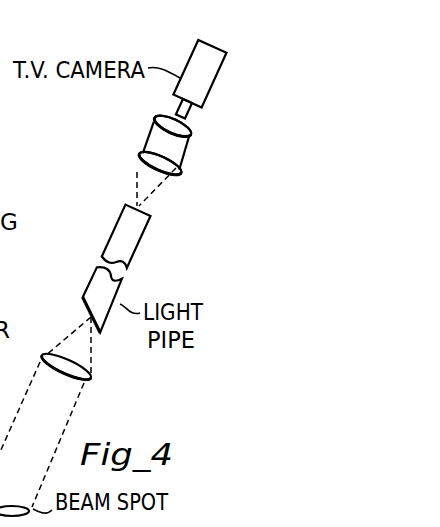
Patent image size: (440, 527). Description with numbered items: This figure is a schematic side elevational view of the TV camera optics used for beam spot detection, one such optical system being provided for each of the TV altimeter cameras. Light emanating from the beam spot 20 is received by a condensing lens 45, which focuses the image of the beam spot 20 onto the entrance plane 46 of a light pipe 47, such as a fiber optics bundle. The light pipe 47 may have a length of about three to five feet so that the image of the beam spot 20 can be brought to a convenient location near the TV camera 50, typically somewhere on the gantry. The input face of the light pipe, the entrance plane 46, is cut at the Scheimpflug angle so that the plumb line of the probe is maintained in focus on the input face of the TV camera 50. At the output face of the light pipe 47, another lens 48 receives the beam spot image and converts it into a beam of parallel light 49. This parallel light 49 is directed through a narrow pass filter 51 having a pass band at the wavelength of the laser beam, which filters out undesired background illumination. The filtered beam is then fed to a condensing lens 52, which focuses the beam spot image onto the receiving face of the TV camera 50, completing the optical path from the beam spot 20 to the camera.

The TV camera 50 is at (210, 44).
The narrow pass filter 51 is at (151, 133).
The condensing lens 52 is at (190, 130).
The lens 48 is at (139, 163).
The beam of parallel light 49 is at (182, 168).
The light pipe 47 is at (116, 226).
The entrance plane of the light pipe 46 is at (88, 302).
The condensing lens 45 is at (44, 357).
The beam spot 20 is at (5, 506).